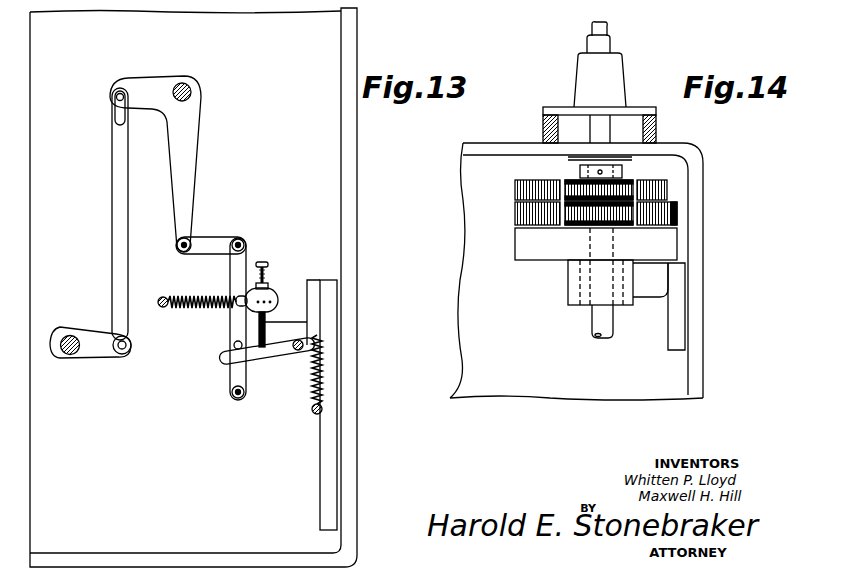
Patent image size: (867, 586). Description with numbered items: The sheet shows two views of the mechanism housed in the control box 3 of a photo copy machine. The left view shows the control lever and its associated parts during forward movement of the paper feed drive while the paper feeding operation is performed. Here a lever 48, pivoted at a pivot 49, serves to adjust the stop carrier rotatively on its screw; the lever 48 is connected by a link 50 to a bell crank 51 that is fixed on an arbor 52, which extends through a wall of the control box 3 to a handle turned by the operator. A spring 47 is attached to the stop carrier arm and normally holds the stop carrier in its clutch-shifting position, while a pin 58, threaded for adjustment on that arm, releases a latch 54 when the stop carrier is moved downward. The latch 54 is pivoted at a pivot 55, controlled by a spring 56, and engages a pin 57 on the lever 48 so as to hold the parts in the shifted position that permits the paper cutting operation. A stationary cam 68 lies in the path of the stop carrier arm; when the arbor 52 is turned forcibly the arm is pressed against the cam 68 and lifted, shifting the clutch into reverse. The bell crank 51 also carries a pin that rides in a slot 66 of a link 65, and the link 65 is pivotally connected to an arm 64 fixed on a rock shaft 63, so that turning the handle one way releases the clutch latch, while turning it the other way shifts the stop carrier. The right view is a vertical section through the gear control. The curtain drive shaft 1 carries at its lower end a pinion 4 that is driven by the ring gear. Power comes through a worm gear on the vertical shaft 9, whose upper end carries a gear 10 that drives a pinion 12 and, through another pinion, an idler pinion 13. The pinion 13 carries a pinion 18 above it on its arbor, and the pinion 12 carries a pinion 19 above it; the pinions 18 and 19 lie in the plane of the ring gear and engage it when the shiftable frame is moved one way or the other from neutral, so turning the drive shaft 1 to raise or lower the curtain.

In FIG. 14, the drive shaft 1 is at (607, 30).
In FIG. 13, the control box 3 is at (348, 155).
In FIG. 14, the pinion 4 is at (625, 183).
In FIG. 14, the vertical shaft 9 is at (595, 323).
In FIG. 14, the gear 10 is at (607, 215).
In FIG. 14, the pinion 12 is at (670, 215).
In FIG. 14, the idler pinion 13 is at (528, 212).
In FIG. 14, the pinion 18 is at (540, 192).
In FIG. 14, the pinion 19 is at (663, 188).
In FIG. 13, the spring 47 is at (203, 298).
In FIG. 13, the lever 48 is at (235, 328).
In FIG. 13, the pivot 49 is at (236, 398).
In FIG. 13, the link 50 is at (209, 245).
In FIG. 13, the bell crank 51 is at (190, 170).
In FIG. 13, the arbor 52 is at (196, 92).
In FIG. 13, the latch 54 is at (267, 354).
In FIG. 13, the pivot 55 is at (298, 352).
In FIG. 13, the spring 56 is at (313, 396).
In FIG. 13, the pin 57 is at (234, 346).
In FIG. 13, the pin 58 is at (264, 262).
In FIG. 13, the rock shaft 63 is at (70, 356).
In FIG. 13, the arm 64 is at (100, 350).
In FIG. 13, the link 65 is at (112, 172).
In FIG. 13, the slot 66 is at (115, 117).
In FIG. 13, the stationary cam 68 is at (268, 320).